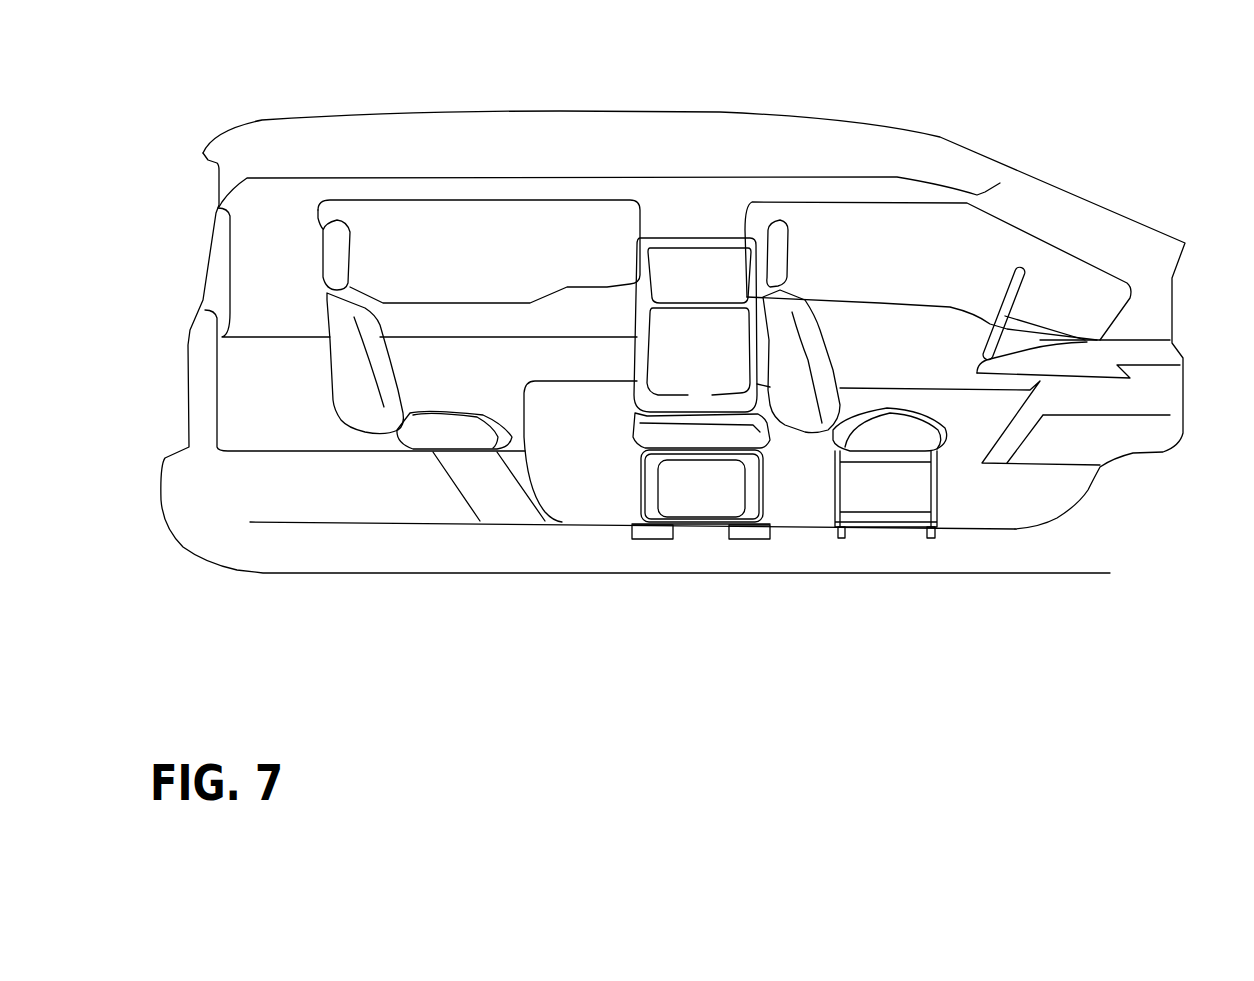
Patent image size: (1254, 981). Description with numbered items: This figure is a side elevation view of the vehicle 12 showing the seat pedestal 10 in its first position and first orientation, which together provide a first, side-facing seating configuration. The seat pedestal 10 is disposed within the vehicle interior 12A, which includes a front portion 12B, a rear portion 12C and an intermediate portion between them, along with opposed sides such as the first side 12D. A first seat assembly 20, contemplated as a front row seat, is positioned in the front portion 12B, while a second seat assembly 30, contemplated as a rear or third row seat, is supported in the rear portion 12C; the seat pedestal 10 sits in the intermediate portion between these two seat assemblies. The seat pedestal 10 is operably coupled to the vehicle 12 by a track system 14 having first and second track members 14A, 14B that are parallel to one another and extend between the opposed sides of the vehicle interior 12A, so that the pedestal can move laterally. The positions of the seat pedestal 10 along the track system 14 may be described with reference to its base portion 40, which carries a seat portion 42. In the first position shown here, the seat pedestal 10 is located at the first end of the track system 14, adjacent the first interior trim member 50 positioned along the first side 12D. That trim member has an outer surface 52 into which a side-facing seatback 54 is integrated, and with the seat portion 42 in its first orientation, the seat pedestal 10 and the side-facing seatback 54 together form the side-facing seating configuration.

The seat pedestal 10 is at (613, 481).
The vehicle 12 is at (1017, 117).
The vehicle interior 12A is at (815, 226).
The front portion 12B is at (973, 280).
The rear portion 12C is at (297, 250).
The first side 12D is at (563, 455).
The track system 14 is at (631, 540).
The first track member 14A is at (750, 535).
The second track member 14B is at (654, 533).
The first seat assembly 20 is at (843, 355).
The second seat assembly 30 is at (408, 326).
The base portion 40 is at (643, 497).
The seat portion 42 is at (763, 433).
The first interior trim member 50 is at (607, 288).
The outer surface 52 is at (592, 371).
The side-facing seatback 54 is at (687, 270).